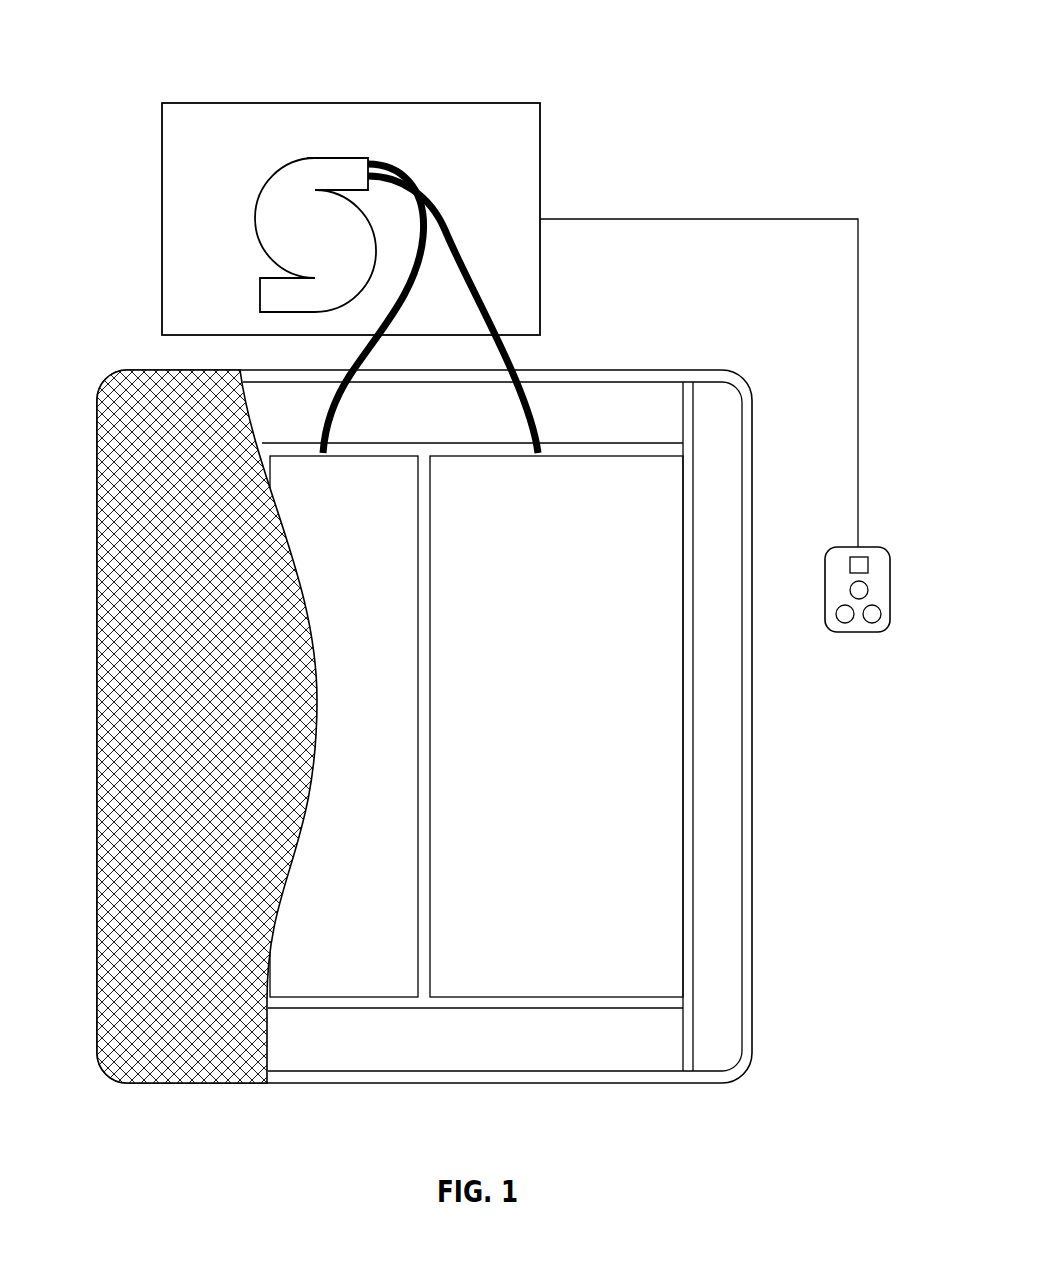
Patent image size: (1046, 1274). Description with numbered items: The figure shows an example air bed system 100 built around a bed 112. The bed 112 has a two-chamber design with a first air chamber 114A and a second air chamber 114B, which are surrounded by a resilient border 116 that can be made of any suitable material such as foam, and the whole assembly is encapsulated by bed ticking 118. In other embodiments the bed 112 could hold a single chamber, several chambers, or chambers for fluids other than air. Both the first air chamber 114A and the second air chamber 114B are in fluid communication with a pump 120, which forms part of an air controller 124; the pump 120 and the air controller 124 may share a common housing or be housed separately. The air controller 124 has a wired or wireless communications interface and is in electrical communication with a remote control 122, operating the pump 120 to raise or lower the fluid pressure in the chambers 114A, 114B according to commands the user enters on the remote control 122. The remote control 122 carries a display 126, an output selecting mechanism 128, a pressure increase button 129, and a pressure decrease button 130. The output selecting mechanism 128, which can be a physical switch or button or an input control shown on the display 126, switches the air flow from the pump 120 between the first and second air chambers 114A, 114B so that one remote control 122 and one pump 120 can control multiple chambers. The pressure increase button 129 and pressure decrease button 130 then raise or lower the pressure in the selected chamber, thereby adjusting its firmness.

The air bed system 100 is at (161, 52).
The bed 112 is at (108, 344).
The first air chamber 114A is at (405, 991).
The second air chamber 114B is at (668, 991).
The resilient border 116 is at (722, 827).
The bed ticking 118 is at (158, 493).
The pump 120 is at (257, 202).
The remote control 122 is at (866, 548).
The air controller 124 is at (540, 103).
The display 126 is at (870, 565).
The output selecting mechanism 128 is at (868, 590).
The pressure increase button 129 is at (845, 623).
The pressure decrease button 130 is at (880, 614).